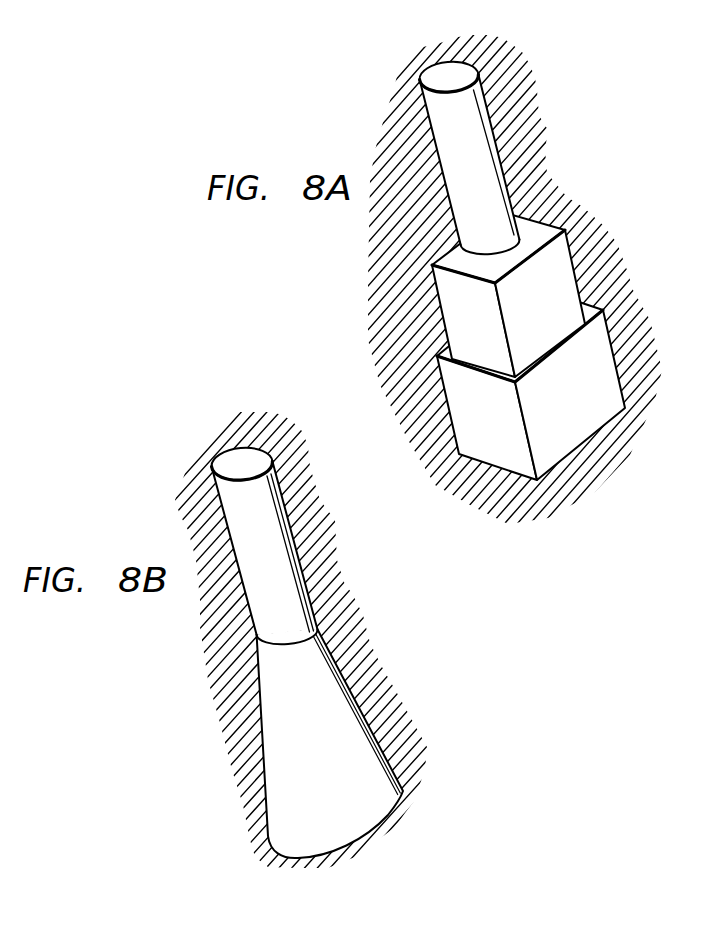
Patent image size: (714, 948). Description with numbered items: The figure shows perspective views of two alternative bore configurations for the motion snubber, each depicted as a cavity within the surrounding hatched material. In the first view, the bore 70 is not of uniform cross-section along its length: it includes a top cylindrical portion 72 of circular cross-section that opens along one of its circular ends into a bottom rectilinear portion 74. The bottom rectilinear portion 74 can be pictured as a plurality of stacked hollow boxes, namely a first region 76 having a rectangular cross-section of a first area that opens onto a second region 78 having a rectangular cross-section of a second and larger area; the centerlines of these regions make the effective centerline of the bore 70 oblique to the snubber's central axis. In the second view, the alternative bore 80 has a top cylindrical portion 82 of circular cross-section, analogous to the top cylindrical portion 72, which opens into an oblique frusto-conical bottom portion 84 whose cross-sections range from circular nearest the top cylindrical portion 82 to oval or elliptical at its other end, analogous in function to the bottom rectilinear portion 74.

In FIG. 8A, the bore 70 is at (539, 269).
In FIG. 8A, the top cylindrical portion 72 is at (448, 171).
In FIG. 8A, the bottom rectilinear portion 74 is at (546, 346).
In FIG. 8A, the first region 76 is at (522, 319).
In FIG. 8A, the second region 78 is at (549, 414).
In FIG. 8B, the bore 80 is at (312, 651).
In FIG. 8B, the top cylindrical portion 82 is at (252, 574).
In FIG. 8B, the oblique frusto-conical bottom portion 84 is at (300, 779).